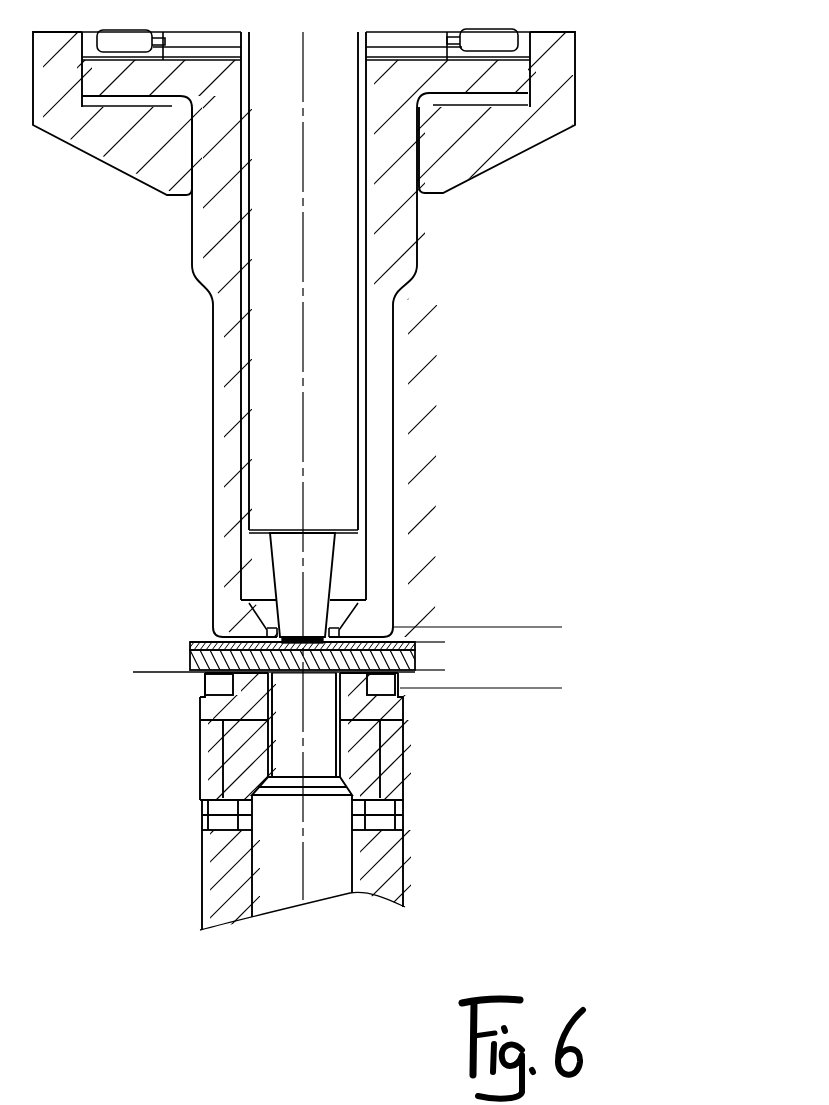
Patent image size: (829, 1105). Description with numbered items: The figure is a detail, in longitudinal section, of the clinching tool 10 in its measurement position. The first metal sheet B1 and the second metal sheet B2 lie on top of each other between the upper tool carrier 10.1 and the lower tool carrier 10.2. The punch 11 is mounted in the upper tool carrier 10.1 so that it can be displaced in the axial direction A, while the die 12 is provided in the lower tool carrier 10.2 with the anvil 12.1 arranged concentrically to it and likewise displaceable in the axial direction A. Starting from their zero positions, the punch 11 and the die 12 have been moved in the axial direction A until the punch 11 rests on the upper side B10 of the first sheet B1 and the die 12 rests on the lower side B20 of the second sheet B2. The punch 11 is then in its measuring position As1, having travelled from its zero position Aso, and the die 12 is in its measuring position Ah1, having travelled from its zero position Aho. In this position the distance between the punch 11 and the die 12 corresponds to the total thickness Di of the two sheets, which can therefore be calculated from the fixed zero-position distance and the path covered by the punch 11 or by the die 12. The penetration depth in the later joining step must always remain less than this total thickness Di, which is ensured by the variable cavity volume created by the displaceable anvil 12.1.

The clinching tool 10 is at (414, 552).
The upper tool carrier 10.1 is at (383, 407).
The lower tool carrier 10.2 is at (403, 870).
The punch 11 is at (337, 494).
The die 12 is at (200, 723).
The anvil 12.1 is at (318, 747).
The axial direction A is at (133, 396).
The first metal sheet B1 is at (190, 648).
The second metal sheet B2 is at (190, 660).
The upper side of the first sheet B10 is at (153, 634).
The lower side of the second sheet B20 is at (150, 679).
The measuring position of the punch As1 is at (432, 641).
The zero position of the punch Aso is at (533, 626).
The measuring position of the die Ah1 is at (432, 671).
The zero position of the die Aho is at (533, 689).
The total thickness of the metal sheets Di is at (485, 665).